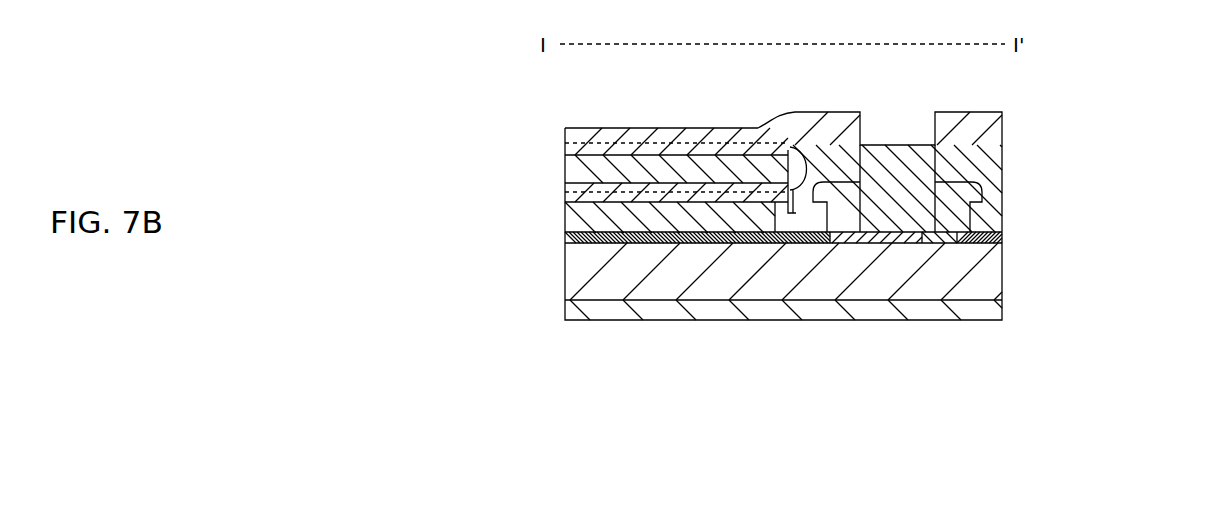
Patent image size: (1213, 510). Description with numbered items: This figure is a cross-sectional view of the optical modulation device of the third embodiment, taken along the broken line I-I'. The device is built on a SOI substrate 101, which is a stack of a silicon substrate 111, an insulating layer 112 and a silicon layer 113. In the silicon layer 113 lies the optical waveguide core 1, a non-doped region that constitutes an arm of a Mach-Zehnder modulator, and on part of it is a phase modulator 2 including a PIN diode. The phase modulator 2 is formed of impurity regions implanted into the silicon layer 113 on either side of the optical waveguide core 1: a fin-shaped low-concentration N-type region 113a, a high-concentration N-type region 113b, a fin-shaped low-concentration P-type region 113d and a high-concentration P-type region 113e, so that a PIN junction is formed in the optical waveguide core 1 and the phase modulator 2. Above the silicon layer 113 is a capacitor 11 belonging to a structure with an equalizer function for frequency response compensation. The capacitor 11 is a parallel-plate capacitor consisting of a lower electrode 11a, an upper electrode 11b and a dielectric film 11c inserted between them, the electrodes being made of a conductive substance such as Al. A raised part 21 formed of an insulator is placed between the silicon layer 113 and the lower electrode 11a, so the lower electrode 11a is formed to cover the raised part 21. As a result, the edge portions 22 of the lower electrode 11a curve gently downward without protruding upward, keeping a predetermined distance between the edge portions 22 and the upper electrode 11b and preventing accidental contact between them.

The optical waveguide core 1 is at (900, 150).
The phase modulator 2 is at (1067, 405).
The capacitor 11 is at (637, 222).
The lower electrode 11a is at (622, 188).
The upper electrode 11b is at (701, 134).
The dielectric film 11c is at (582, 168).
The raised part 21 is at (680, 212).
The edge portions 22 is at (790, 115).
The SOI substrate 101 is at (734, 267).
The silicon substrate 111 is at (576, 308).
The insulating layer 112 is at (576, 268).
The silicon layer 113 is at (768, 318).
The low-concentration N-type region 113a is at (865, 243).
The high-concentration N-type region 113b is at (768, 243).
The low-concentration P-type region 113d is at (930, 243).
The high-concentration P-type region 113e is at (985, 243).